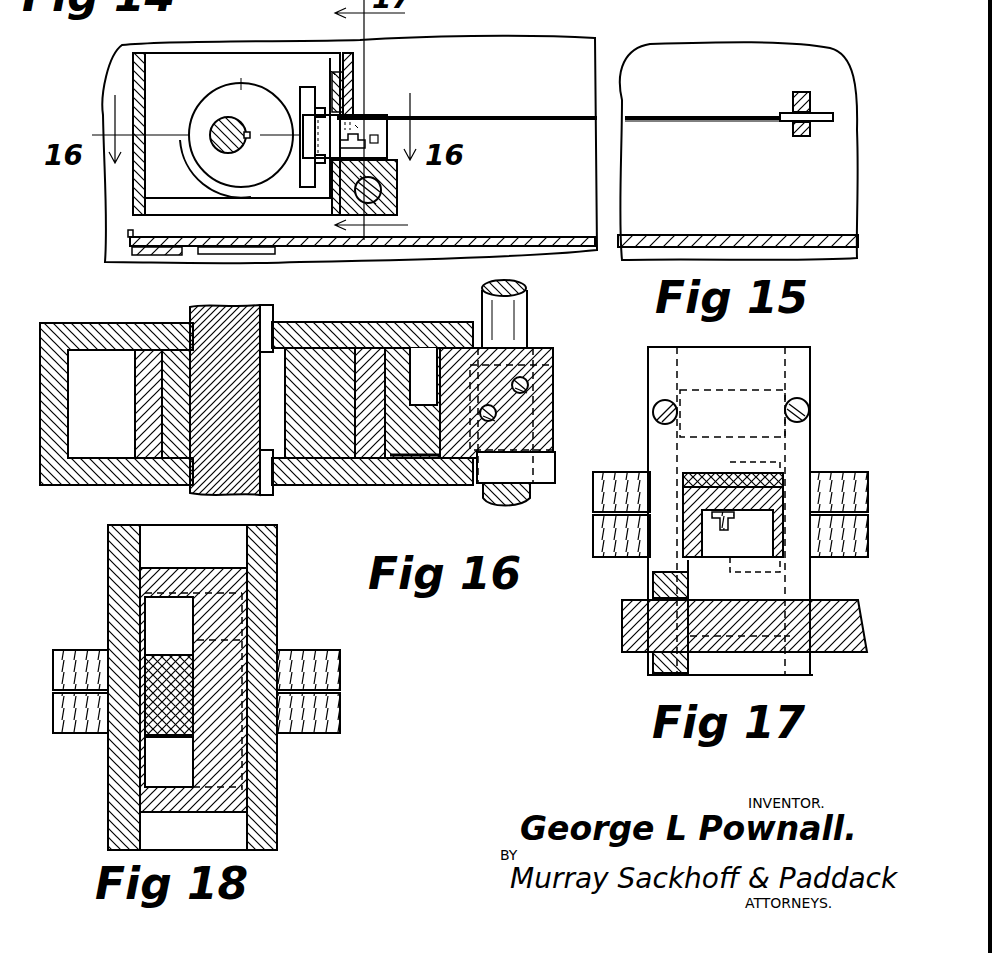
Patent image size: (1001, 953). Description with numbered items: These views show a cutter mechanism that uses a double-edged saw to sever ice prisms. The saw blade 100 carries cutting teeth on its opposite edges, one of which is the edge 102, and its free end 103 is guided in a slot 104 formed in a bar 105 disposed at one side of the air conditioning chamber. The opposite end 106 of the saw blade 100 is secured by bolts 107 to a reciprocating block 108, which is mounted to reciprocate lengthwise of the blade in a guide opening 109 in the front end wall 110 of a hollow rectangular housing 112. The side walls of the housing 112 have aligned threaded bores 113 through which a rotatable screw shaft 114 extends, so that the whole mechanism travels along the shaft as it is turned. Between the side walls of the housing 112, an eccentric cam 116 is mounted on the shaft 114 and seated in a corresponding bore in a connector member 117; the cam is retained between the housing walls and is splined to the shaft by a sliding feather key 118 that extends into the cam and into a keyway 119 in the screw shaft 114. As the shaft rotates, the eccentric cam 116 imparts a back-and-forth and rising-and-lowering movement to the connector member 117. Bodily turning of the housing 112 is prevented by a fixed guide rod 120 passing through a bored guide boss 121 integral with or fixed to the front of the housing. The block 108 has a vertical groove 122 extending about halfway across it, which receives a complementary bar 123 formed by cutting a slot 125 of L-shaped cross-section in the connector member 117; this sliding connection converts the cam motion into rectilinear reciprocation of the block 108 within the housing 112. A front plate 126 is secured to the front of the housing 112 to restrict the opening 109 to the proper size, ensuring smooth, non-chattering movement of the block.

In FIG. 15, the saw blade 100 is at (665, 113).
In FIG. 15, the edge 102 is at (705, 113).
In FIG. 15, the free end 103 is at (833, 115).
In FIG. 15, the slot 104 is at (805, 112).
In FIG. 15, the bar 105 is at (800, 92).
In FIG. 15, the opposite end 106 is at (385, 118).
In FIG. 17, the opposite end 106 is at (785, 466).
In FIG. 15, the bolts 107 is at (360, 112).
In FIG. 16, the bolts 107 is at (498, 412).
In FIG. 17, the bolts 107 is at (747, 514).
In FIG. 15, the reciprocating block 108 is at (385, 150).
In FIG. 16, the reciprocating block 108 is at (522, 378).
In FIG. 17, the reciprocating block 108 is at (650, 588).
In FIG. 15, the guide opening 109 is at (318, 98).
In FIG. 17, the guide opening 109 is at (668, 468).
In FIG. 15, the front end wall 110 is at (332, 72).
In FIG. 15, the housing 112 is at (133, 73).
In FIG. 16, the housing 112 is at (320, 340).
In FIG. 17, the housing 112 is at (812, 565).
In FIG. 18, the housing 112 is at (270, 548).
In FIG. 16, the threaded bores 113 is at (190, 325).
In FIG. 15, the screw shaft 114 is at (226, 128).
In FIG. 16, the screw shaft 114 is at (240, 330).
In FIG. 17, the screw shaft 114 is at (700, 500).
In FIG. 18, the screw shaft 114 is at (322, 655).
In FIG. 15, the eccentric cam 116 is at (243, 100).
In FIG. 16, the eccentric cam 116 is at (330, 390).
In FIG. 15, the connector member 117 is at (285, 188).
In FIG. 16, the connector member 117 is at (145, 392).
In FIG. 18, the connector member 117 is at (170, 575).
In FIG. 16, the feather key 118 is at (266, 335).
In FIG. 16, the keyway 119 is at (278, 480).
In FIG. 17, the keyway 119 is at (612, 512).
In FIG. 18, the keyway 119 is at (322, 690).
In FIG. 15, the guide rod 120 is at (380, 190).
In FIG. 17, the guide rod 120 is at (655, 644).
In FIG. 15, the guide boss 121 is at (372, 205).
In FIG. 17, the guide boss 121 is at (640, 612).
In FIG. 16, the vertical groove 122 is at (440, 400).
In FIG. 18, the vertical groove 122 is at (185, 738).
In FIG. 16, the bar 123 is at (425, 390).
In FIG. 18, the bar 123 is at (215, 620).
In FIG. 16, the slot 125 is at (430, 456).
In FIG. 18, the slot 125 is at (160, 628).
In FIG. 15, the front plate 126 is at (352, 68).
In FIG. 17, the front plate 126 is at (770, 378).